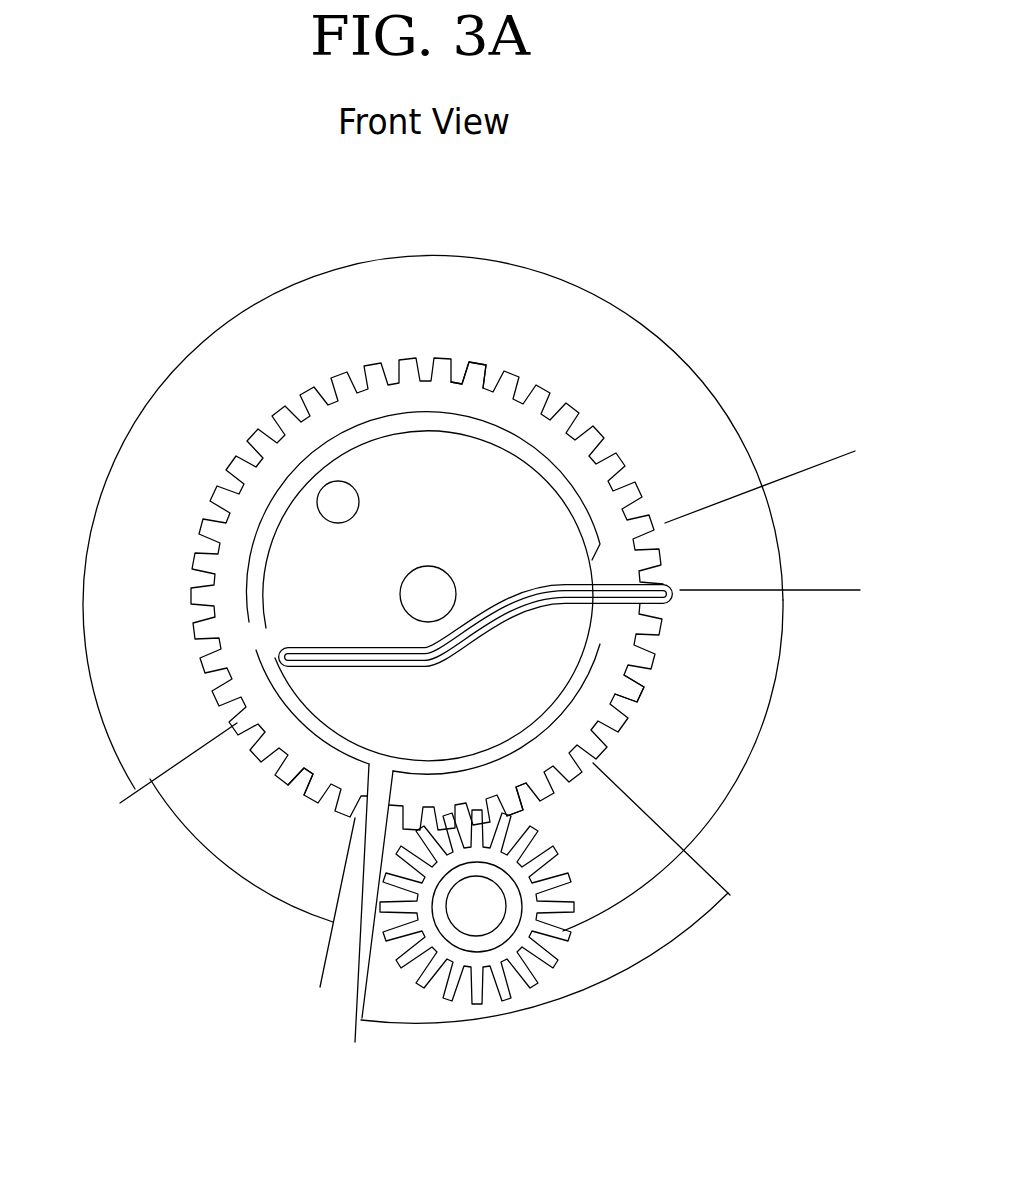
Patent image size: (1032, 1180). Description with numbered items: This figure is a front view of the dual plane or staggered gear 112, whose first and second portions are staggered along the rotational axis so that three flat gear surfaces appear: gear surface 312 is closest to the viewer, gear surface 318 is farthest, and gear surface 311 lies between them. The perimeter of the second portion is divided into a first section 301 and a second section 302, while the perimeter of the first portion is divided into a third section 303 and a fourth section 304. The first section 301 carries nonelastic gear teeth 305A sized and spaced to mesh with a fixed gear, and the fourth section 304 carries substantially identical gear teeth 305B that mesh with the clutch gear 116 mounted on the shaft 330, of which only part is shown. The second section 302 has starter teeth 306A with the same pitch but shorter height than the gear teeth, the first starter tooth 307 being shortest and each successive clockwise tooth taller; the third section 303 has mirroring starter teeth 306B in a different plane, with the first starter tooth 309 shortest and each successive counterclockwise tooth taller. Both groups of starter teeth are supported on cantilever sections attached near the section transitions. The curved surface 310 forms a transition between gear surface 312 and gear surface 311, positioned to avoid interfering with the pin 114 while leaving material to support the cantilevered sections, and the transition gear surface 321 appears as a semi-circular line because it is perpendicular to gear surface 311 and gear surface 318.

The staggered gear 112 is at (540, 507).
The pin 114 is at (333, 523).
The clutch gear 116 is at (507, 995).
The first section 301 is at (433, 529).
The second section 302 is at (241, 854).
The third section 303 is at (545, 914).
The fourth section 304 is at (709, 691).
The gear teeth 305A is at (470, 360).
The gear teeth 305B is at (640, 703).
The starter teeth 306A is at (293, 773).
The starter teeth 306B is at (537, 800).
The first starter tooth 307 is at (353, 817).
The first starter tooth 309 is at (388, 825).
The curved surface 310 is at (503, 613).
The gear surface 311 is at (410, 462).
The gear surface 312 is at (557, 640).
The gear surface 318 is at (242, 515).
The transition gear surface 321 is at (510, 403).
The shaft 330 is at (505, 920).